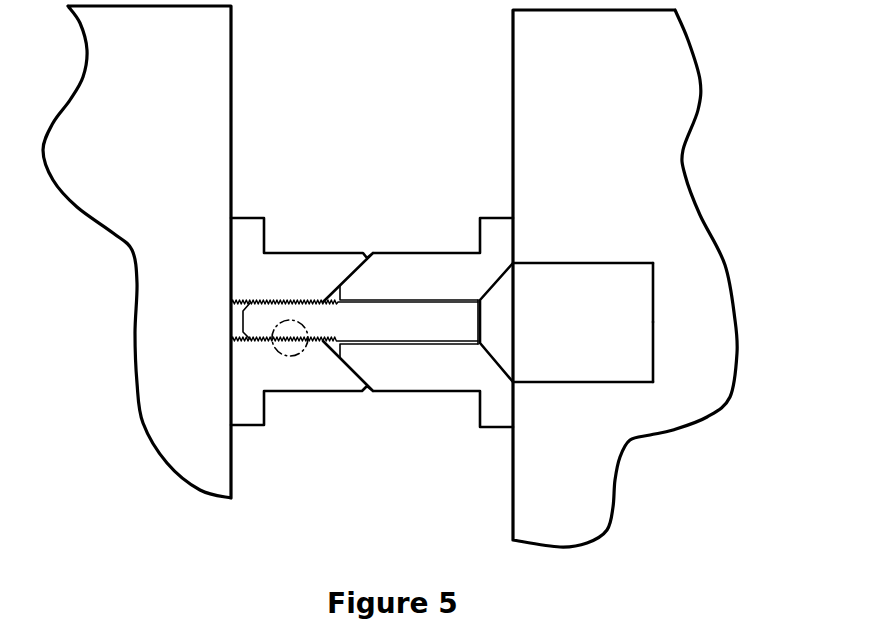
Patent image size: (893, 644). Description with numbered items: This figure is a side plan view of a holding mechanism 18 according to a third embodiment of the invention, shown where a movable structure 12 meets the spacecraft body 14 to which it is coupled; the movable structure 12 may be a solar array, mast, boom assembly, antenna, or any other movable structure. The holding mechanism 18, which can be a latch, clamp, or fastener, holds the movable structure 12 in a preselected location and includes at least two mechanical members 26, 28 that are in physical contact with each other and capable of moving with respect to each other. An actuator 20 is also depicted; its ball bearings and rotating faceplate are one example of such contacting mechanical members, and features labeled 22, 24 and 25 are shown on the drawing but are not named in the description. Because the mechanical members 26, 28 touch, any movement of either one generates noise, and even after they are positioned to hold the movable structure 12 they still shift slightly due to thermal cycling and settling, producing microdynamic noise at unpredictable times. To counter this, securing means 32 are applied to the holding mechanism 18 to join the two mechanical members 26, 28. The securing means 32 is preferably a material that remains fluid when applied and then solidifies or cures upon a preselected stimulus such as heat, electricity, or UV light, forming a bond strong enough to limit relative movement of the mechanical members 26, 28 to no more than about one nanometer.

The movable structure 12 is at (625, 278).
The spacecraft body 14 is at (137, 252).
The holding mechanism 18 is at (409, 178).
The actuator 20 is at (566, 322).
The first surface of head 22 is at (654, 298).
The second surface of head 24 is at (654, 345).
The recess in housing member 25 is at (717, 447).
The mechanical member 26 is at (273, 426).
The mechanical member 28 is at (453, 313).
The securing means 32 is at (300, 357).